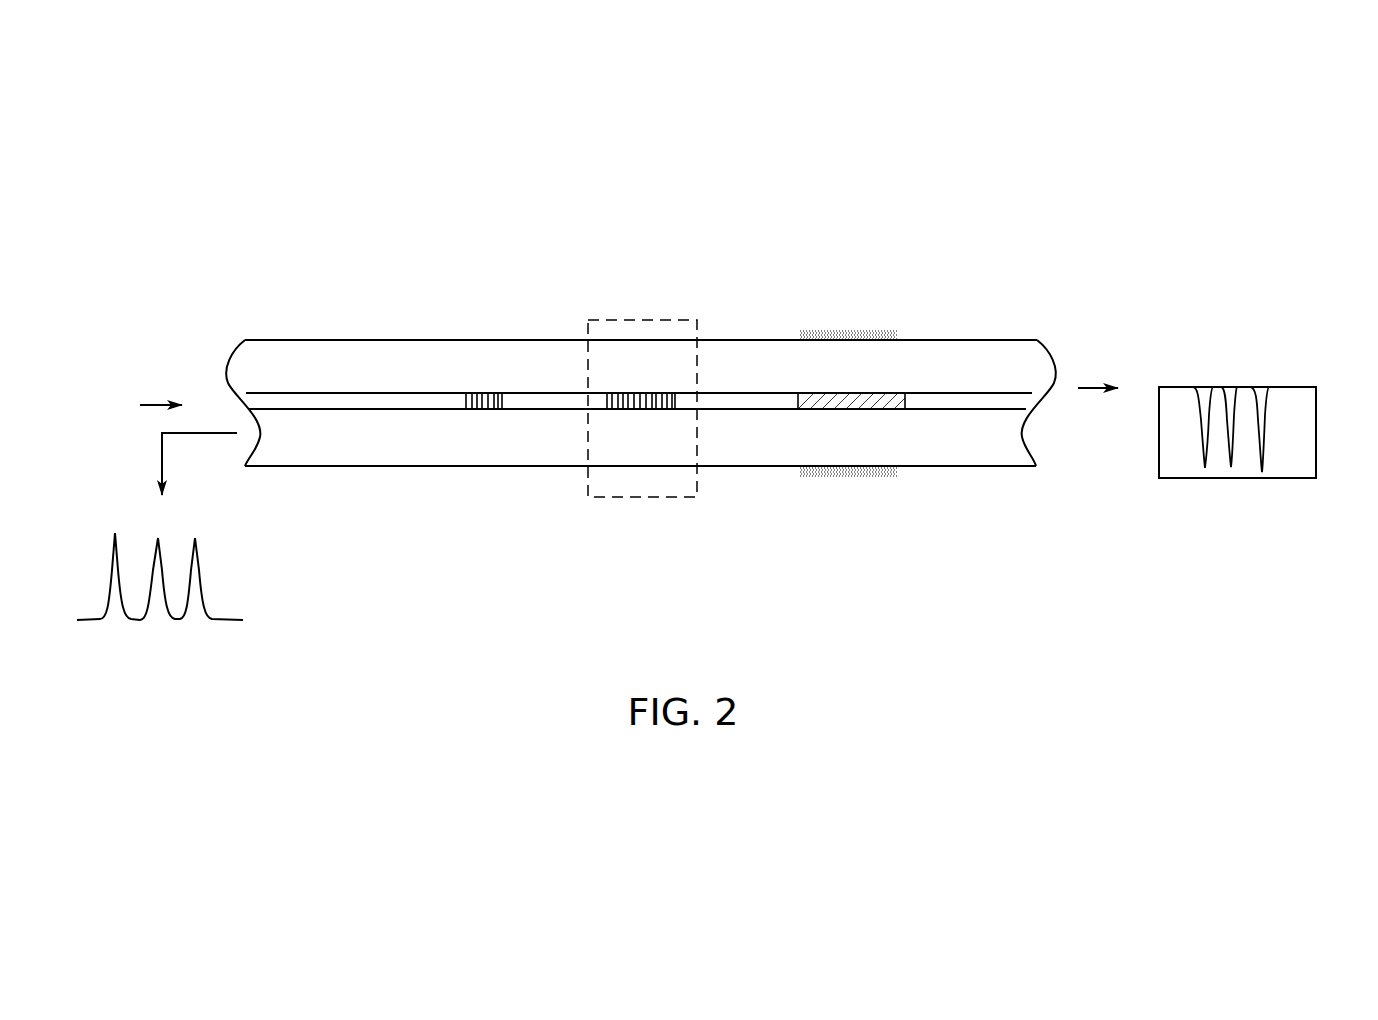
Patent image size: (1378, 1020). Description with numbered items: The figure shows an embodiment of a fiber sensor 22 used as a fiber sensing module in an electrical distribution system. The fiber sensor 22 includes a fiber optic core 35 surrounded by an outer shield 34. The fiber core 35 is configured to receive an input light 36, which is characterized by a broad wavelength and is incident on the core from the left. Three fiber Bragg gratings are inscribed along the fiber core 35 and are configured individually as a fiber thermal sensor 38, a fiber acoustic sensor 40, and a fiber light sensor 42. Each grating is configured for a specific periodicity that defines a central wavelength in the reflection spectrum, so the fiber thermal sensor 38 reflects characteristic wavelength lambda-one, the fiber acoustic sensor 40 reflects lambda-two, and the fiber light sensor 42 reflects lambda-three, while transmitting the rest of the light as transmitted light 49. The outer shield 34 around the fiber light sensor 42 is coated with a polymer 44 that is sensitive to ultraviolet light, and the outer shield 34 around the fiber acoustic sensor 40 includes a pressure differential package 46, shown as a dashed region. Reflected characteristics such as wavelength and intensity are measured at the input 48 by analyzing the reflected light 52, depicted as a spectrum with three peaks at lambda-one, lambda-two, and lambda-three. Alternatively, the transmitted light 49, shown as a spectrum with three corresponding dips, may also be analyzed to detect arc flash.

The fiber sensor 22 is at (1250, 126).
The outer shield 34 is at (999, 340).
The fiber optic core 35 is at (308, 393).
The input light 36 is at (160, 400).
The fiber thermal sensor 38 is at (488, 393).
The fiber acoustic sensor 40 is at (650, 393).
The fiber light sensor 42 is at (856, 393).
The polymer 44 is at (829, 332).
The pressure differential package 46 is at (625, 320).
The input 48 is at (229, 345).
The transmitted light 49 is at (1105, 386).
The reflected light 52 is at (157, 472).